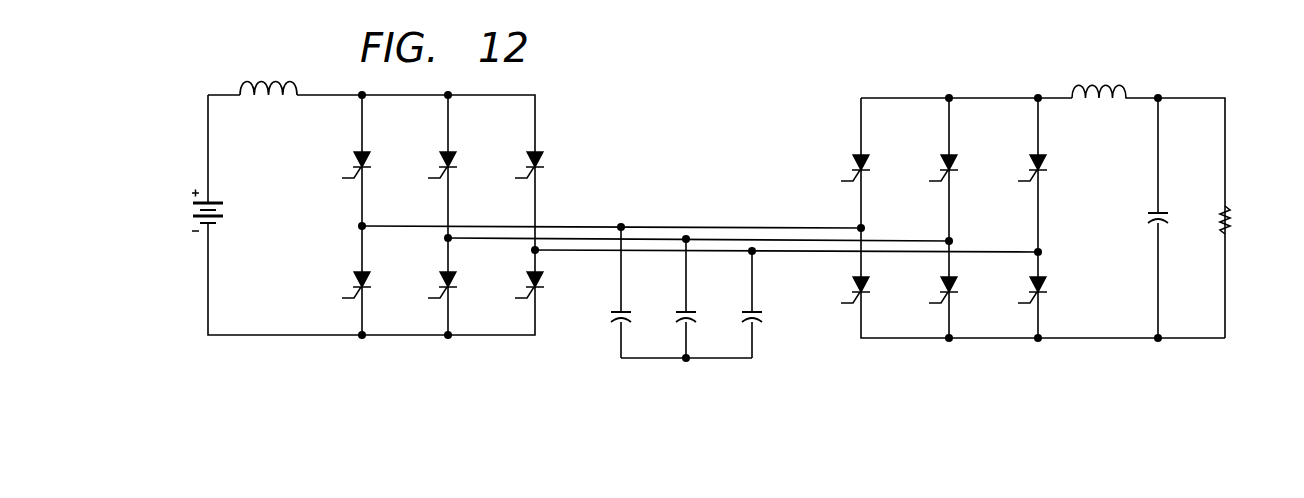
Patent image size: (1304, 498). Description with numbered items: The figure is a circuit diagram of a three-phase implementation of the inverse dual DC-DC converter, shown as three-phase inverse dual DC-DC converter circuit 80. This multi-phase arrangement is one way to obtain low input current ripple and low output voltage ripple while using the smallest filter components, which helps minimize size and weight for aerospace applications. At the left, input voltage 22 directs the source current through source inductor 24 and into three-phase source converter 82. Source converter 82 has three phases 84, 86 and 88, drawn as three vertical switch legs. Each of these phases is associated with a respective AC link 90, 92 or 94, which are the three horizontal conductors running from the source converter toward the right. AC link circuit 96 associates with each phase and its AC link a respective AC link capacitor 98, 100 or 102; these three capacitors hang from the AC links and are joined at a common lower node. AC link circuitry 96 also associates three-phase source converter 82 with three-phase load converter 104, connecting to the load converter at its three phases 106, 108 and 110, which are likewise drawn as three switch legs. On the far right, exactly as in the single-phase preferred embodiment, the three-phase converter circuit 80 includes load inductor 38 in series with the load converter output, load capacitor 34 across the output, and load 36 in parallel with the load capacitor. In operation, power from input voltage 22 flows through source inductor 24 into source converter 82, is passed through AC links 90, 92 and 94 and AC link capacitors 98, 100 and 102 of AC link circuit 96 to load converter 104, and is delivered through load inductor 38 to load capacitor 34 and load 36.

The three-phase inverse dual DC-DC converter circuit 80 is at (132, 75).
The input voltage 22 is at (180, 222).
The source inductor 24 is at (242, 70).
The three-phase source converter 82 is at (612, 97).
The phase of source converter 84 is at (363, 129).
The phase of source converter 86 is at (449, 129).
The phase of source converter 88 is at (536, 129).
The AC link 90 is at (602, 226).
The AC link 92 is at (665, 238).
The AC link 94 is at (722, 250).
The AC link circuit 96 is at (672, 168).
The AC link capacitor 98 is at (604, 312).
The AC link capacitor 100 is at (669, 312).
The AC link capacitor 102 is at (734, 312).
The three-phase load converter 104 is at (820, 95).
The phase of load converter 106 is at (860, 132).
The phase of load converter 108 is at (948, 132).
The phase of load converter 110 is at (1037, 132).
The load inductor 38 is at (1122, 72).
The load capacitor 34 is at (1147, 222).
The load 36 is at (1226, 210).